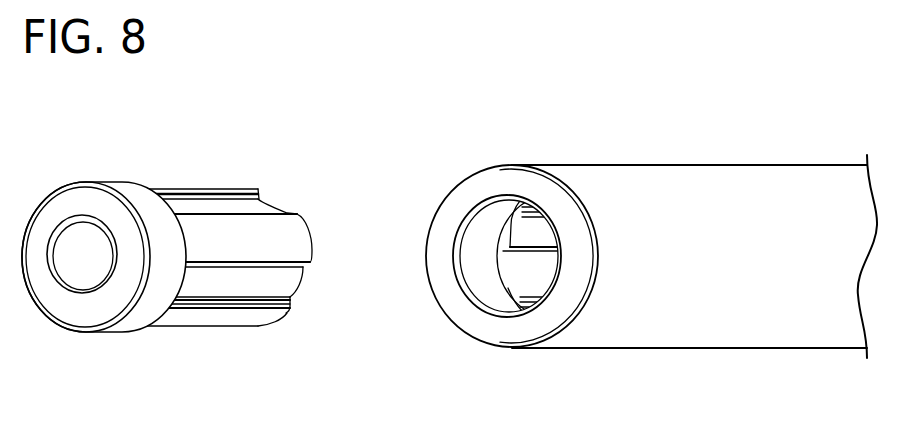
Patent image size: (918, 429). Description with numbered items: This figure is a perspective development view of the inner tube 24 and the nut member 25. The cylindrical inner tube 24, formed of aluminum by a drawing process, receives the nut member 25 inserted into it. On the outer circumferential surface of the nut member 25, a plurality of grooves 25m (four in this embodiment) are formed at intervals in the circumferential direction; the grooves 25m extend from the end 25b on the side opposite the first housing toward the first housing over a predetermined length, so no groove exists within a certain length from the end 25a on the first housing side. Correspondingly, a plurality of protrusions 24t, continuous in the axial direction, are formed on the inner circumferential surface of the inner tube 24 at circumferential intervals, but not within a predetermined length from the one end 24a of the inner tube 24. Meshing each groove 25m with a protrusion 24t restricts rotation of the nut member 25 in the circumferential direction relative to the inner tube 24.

The inner tube 24 is at (698, 164).
The one end of the inner tube 24a is at (512, 182).
The protrusion 24t is at (508, 227).
The nut member 25 is at (197, 187).
The end of the nut member on the first housing side 25a is at (83, 312).
The end of the nut member on the opposite side of the first housing 25b is at (286, 316).
The groove 25m is at (262, 213).